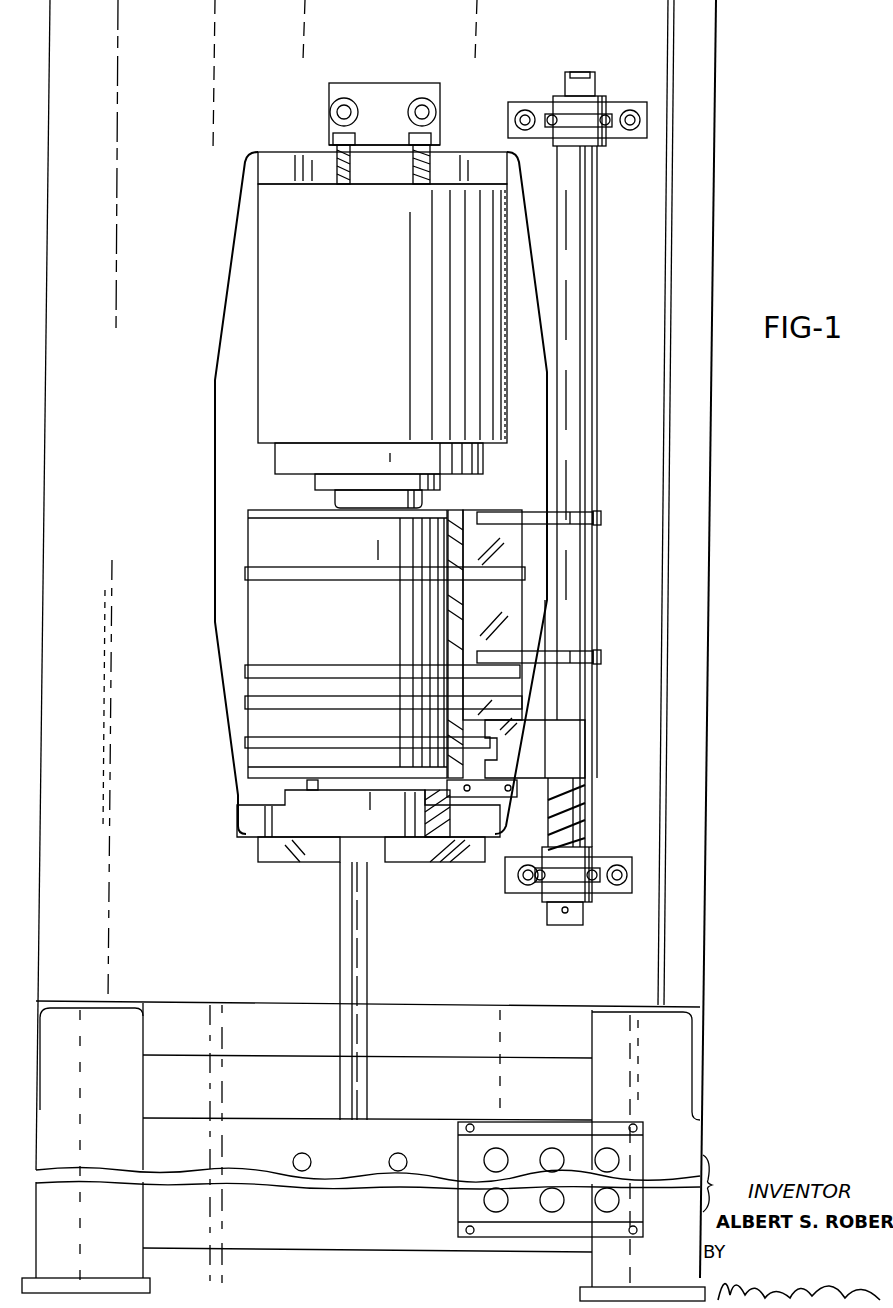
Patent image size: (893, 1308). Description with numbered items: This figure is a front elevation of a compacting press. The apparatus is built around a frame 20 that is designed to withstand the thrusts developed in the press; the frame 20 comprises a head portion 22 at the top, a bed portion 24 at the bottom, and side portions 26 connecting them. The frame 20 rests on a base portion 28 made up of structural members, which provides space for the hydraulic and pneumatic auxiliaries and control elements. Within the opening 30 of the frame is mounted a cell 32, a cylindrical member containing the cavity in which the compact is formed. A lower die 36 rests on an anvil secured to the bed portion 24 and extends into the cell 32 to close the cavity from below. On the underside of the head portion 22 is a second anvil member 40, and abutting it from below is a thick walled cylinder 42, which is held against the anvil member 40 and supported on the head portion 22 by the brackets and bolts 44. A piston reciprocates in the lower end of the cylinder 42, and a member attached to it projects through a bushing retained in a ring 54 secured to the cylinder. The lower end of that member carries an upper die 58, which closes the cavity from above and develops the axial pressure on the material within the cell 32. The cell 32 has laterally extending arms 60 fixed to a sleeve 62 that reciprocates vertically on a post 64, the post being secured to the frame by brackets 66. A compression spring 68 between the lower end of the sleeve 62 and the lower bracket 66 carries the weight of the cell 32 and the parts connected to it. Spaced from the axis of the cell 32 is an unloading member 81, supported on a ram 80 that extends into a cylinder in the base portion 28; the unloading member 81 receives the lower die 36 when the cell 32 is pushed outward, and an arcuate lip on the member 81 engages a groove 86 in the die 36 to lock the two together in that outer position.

The frame 20 is at (683, 500).
The head portion 22 is at (605, 30).
The bed portion 24 is at (170, 790).
The side portions 26 is at (655, 445).
The base portion 28 is at (700, 1062).
The opening 30 is at (218, 442).
The cell 32 is at (236, 588).
The lower die 36 is at (290, 787).
The second anvil member 40 is at (270, 160).
The thick walled cylinder 42 is at (270, 276).
The brackets and bolts 44 is at (385, 108).
The ring 54 is at (292, 456).
The upper die 58 is at (352, 500).
The arms 60 is at (527, 517).
The sleeve 62 is at (575, 332).
The post 64 is at (585, 812).
The brackets 66 is at (608, 110).
The compression spring 68 is at (557, 790).
The ram 80 is at (350, 975).
The unloading member 81 is at (297, 820).
The groove 86 is at (432, 797).